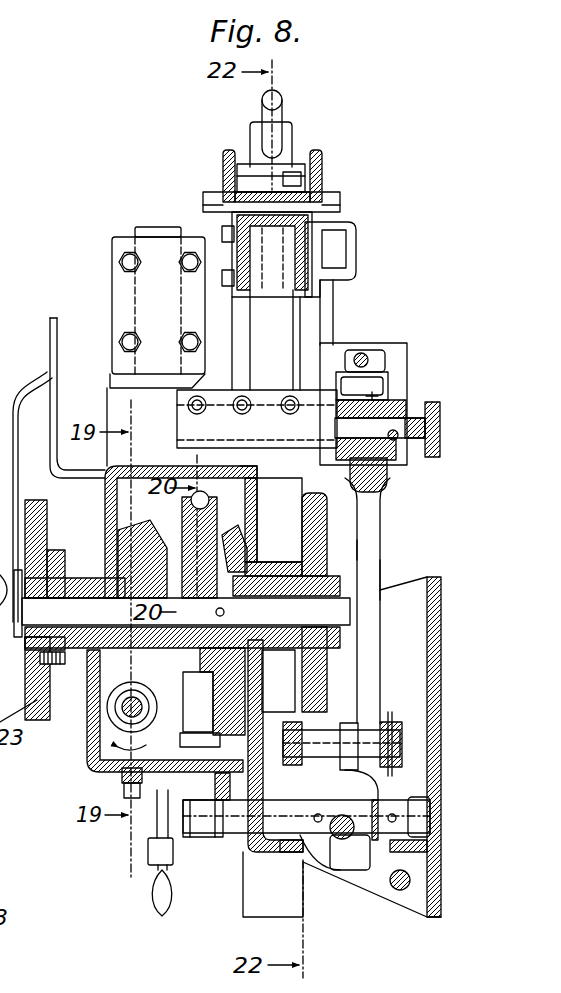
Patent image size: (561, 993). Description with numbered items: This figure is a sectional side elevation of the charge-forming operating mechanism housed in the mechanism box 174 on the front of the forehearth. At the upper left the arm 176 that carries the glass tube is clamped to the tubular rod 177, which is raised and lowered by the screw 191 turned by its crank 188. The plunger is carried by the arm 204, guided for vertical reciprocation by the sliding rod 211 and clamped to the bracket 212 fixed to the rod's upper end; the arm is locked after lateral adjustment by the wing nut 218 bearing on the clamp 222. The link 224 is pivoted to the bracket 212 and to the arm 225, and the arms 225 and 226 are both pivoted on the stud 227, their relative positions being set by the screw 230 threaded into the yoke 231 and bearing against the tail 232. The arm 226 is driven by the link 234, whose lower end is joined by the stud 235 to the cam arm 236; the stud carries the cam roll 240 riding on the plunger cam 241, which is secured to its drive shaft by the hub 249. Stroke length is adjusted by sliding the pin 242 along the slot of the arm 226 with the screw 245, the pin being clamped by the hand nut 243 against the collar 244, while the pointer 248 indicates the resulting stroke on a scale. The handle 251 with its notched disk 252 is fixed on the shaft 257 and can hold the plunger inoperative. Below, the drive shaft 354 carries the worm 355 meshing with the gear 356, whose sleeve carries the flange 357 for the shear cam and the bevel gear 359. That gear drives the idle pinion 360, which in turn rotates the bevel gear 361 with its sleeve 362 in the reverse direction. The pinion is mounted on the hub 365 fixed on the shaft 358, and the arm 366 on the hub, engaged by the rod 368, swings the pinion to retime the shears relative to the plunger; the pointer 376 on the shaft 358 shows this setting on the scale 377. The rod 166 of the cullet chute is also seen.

The rod 166 is at (411, 880).
The box 174 is at (445, 742).
The arm 176 is at (118, 248).
The tubular rod 177 is at (152, 227).
The crank 188 is at (154, 890).
The screw 191 is at (157, 830).
The arm 204 is at (322, 182).
The sliding rod 211 is at (292, 312).
The bracket 212 is at (306, 236).
The wing nut 218 is at (293, 128).
The clamp 222 is at (323, 162).
The link 224 is at (330, 290).
The arm 225 is at (392, 354).
The arm 226 is at (387, 478).
The stud 227 is at (178, 432).
The screw 230 is at (388, 372).
The yoke 231 is at (354, 348).
The tail 232 is at (368, 352).
The link 234 is at (372, 566).
The stud 235 is at (402, 740).
The cam arm 236 is at (398, 724).
The cam roll 240 is at (342, 723).
The cam 241 is at (346, 517).
The pin 242 is at (440, 428).
The hand nut 243 is at (441, 410).
The collar 244 is at (410, 450).
The screw 245 is at (398, 436).
The pointer 248 is at (382, 404).
The hub 249 is at (350, 548).
The handle 251 is at (187, 832).
The disk 252 is at (226, 852).
The shaft 257 is at (418, 806).
The shaft 354 is at (120, 717).
The worm 355 is at (113, 733).
The gear 356 is at (127, 537).
The flange 357 is at (60, 547).
The shaft 358 is at (182, 603).
The bevel gear 359 is at (190, 515).
The idle pinion 360 is at (224, 704).
The bevel gear 361 is at (279, 520).
The sleeve 362 is at (279, 681).
The hub 365 is at (218, 568).
The arm 366 is at (250, 484).
The rod 368 is at (232, 548).
The pointer 376 is at (47, 357).
The scale 377 is at (50, 328).